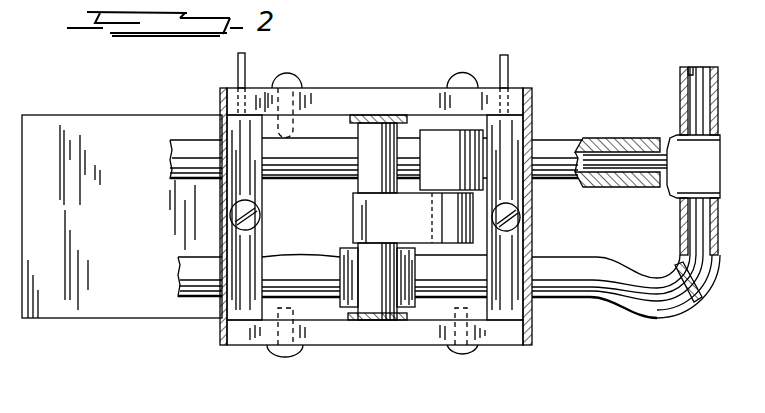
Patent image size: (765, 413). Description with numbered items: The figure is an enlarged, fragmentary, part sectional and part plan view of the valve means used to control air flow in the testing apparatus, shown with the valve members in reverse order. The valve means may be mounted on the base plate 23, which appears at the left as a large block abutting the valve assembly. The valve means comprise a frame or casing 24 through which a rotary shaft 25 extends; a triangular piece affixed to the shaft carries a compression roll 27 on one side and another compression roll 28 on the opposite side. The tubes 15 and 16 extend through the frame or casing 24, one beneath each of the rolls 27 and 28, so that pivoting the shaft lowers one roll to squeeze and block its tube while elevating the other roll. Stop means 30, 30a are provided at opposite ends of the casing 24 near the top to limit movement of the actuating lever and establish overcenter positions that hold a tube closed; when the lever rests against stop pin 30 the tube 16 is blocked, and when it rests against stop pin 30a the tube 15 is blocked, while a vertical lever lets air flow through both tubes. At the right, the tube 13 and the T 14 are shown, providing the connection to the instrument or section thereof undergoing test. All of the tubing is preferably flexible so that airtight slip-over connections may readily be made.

The tube 13 is at (685, 72).
The T 14 is at (702, 165).
The tube 15 is at (560, 150).
The tube 16 is at (596, 266).
The base plate 23 is at (89, 309).
The frame or casing 24 is at (412, 337).
The rotary shaft 25 is at (368, 177).
The compression roll 27 is at (352, 288).
The compression roll 28 is at (470, 163).
The stop pin 30 is at (245, 65).
The stop pin 30a is at (500, 57).